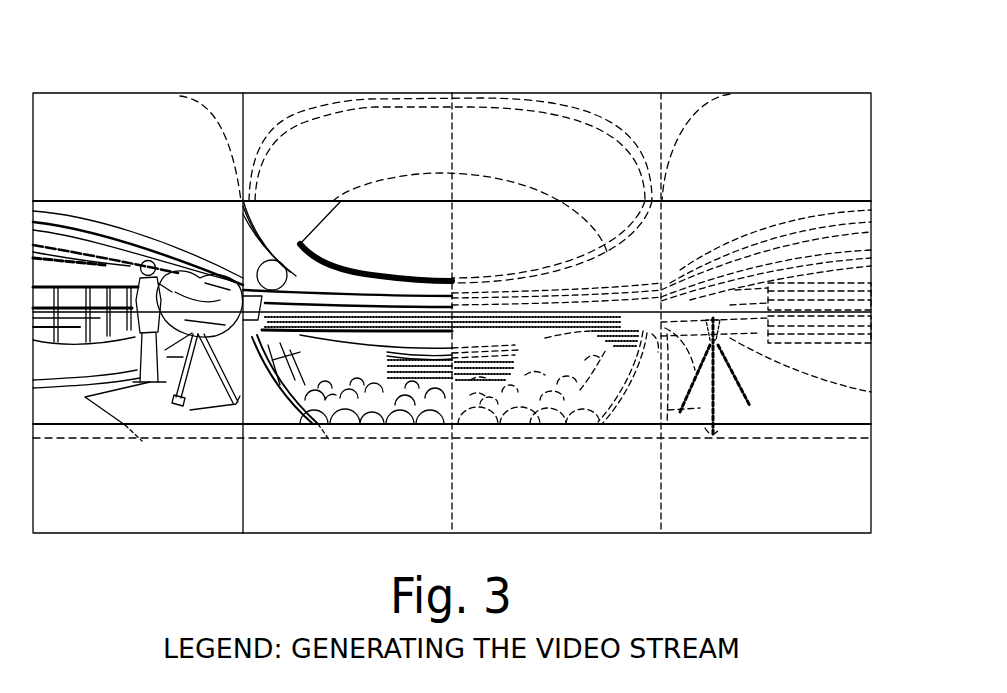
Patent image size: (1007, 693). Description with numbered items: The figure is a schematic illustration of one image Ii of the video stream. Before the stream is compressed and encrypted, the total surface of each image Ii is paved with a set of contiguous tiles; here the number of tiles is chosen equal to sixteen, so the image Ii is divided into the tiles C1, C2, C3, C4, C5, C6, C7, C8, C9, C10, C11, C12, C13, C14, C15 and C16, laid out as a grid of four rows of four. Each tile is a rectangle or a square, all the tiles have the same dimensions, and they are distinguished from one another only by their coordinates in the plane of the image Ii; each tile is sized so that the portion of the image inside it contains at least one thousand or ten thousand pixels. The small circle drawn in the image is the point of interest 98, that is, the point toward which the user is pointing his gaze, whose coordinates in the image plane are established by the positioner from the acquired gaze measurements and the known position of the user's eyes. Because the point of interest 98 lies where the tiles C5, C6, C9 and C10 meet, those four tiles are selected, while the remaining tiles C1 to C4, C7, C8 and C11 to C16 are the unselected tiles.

The image Ii is at (690, 89).
The point of interest 98 is at (271, 277).
The tile C1 is at (107, 141).
The tile C2 is at (343, 142).
The tile C3 is at (537, 142).
The tile C4 is at (773, 142).
The tile C5 is at (92, 271).
The tile C6 is at (337, 256).
The tile C7 is at (537, 262).
The tile C8 is at (772, 264).
The tile C9 is at (112, 361).
The tile C10 is at (343, 371).
The tile C11 is at (556, 359).
The tile C12 is at (778, 357).
The tile C13 is at (131, 486).
The tile C14 is at (354, 486).
The tile C15 is at (556, 486).
The tile C16 is at (778, 486).